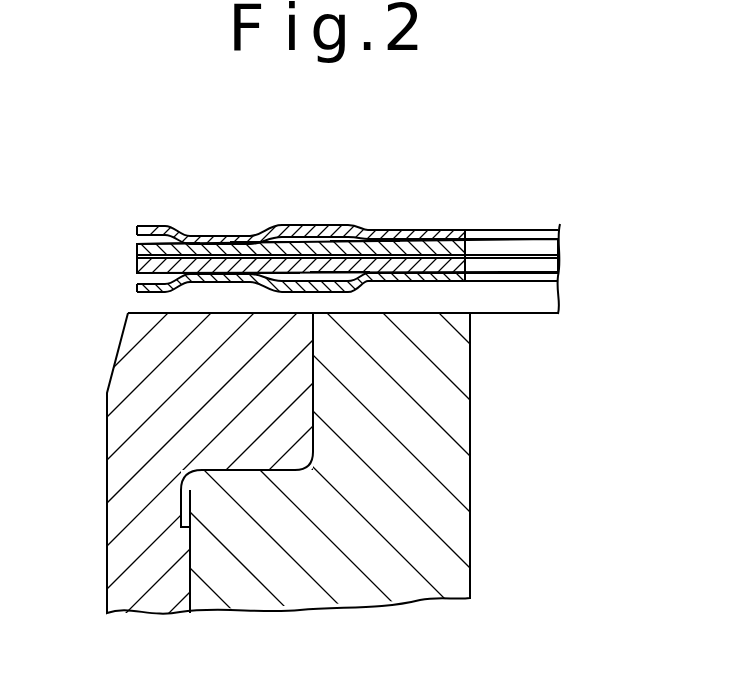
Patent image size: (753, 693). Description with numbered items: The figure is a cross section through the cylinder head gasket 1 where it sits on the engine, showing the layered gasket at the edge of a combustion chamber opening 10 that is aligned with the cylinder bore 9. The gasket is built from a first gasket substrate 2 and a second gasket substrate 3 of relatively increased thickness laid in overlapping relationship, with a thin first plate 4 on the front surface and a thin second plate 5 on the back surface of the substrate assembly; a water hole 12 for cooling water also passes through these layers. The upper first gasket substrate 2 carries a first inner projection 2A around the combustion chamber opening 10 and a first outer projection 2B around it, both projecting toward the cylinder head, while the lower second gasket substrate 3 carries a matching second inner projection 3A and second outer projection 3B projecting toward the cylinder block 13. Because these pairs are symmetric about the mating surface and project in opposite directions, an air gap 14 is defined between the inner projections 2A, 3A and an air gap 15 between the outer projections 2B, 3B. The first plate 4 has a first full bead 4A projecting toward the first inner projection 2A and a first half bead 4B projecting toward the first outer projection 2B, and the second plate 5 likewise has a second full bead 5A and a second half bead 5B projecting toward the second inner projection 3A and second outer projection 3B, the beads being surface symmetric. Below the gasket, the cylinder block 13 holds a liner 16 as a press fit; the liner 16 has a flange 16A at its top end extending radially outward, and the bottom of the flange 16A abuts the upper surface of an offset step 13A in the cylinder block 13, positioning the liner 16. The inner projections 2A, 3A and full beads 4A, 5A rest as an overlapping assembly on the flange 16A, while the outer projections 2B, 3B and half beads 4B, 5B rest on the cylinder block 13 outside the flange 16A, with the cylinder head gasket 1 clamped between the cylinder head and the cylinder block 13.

The cylinder head gasket 1 is at (320, 218).
The first gasket substrate 2 is at (337, 188).
The first inner projection 2A is at (275, 242).
The first outer projection 2B is at (360, 240).
The second gasket substrate 3 is at (304, 312).
The second inner projection 3A is at (274, 273).
The second outer projection 3B is at (336, 274).
The first plate 4 is at (335, 156).
The first full bead 4A is at (218, 236).
The first half bead 4B is at (352, 226).
The second plate 5 is at (304, 322).
The second full bead 5A is at (213, 292).
The second half bead 5B is at (362, 292).
The cylinder bore 9 is at (373, 489).
The combustion chamber opening 10 is at (137, 247).
The water hole 12 is at (480, 232).
The cylinder block 13 is at (373, 489).
The offset step 13A is at (262, 462).
The air gap 14 is at (179, 274).
The air gap 15 is at (385, 262).
The liner 16 is at (153, 603).
The flange 16A is at (313, 403).